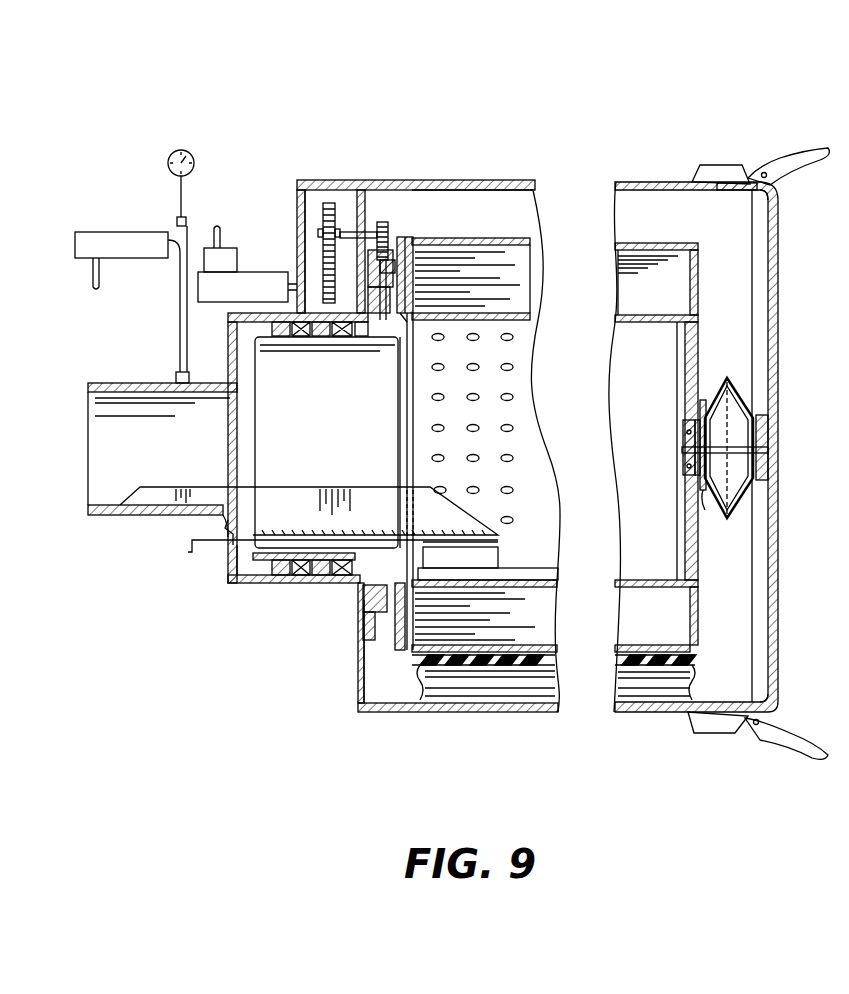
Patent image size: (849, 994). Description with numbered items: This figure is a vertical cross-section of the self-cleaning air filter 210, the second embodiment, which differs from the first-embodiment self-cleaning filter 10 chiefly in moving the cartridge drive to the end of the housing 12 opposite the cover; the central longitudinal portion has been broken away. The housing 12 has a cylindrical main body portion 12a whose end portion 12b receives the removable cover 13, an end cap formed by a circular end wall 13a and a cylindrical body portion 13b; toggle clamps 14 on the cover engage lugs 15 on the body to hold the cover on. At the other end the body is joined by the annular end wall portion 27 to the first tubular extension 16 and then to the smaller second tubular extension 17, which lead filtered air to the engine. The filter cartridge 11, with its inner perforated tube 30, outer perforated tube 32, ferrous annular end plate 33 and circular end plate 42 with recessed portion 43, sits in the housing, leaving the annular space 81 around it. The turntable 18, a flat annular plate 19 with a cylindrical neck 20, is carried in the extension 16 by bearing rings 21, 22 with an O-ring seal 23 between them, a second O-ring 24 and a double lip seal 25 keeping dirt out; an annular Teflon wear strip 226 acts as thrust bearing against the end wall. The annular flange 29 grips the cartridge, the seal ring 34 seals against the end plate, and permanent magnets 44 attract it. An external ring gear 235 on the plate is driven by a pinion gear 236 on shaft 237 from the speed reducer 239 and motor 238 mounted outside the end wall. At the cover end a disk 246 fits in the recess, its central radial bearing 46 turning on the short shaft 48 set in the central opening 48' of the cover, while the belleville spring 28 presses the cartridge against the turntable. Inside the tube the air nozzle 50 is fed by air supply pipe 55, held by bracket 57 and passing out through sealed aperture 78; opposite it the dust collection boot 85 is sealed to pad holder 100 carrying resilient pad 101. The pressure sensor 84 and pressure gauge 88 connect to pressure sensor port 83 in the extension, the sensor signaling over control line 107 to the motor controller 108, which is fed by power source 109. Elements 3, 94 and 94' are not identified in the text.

The self-cleaning air filter 210 is at (540, 93).
The housing 12 is at (481, 178).
The annular space 81 is at (519, 183).
The shaft 237 is at (333, 215).
The speed reducer 239 is at (322, 220).
The annular end wall portion 27 is at (349, 236).
The pinion gear 236 is at (386, 258).
The external ring gear 235 is at (396, 238).
The self-cleaning filter 10 is at (378, 205).
The annular flange 29 is at (411, 242).
The permanent magnets 44 is at (416, 262).
The seal ring 34 is at (416, 302).
The annular end plate 33 is at (500, 239).
The filter cartridge 11 is at (542, 238).
The inner perforated tube 30 is at (527, 334).
The annular Teflon wear strip 226 is at (403, 315).
The first tubular extension 16 is at (246, 583).
The dust collection boot 85 is at (372, 718).
The pad holder 100 is at (362, 704).
The cylindrical neck 20 is at (276, 345).
The bearing ring 22 is at (322, 345).
The flat annular plate 19 is at (391, 348).
The turntable 18 is at (376, 350).
The bearing ring 21 is at (268, 578).
The O-ring seal 23 is at (296, 573).
The second O-ring 24 is at (335, 573).
The double lip seal 25 is at (356, 588).
The second tubular extension 17 is at (110, 382).
The bracket 57 is at (152, 488).
The air supply pipe 55 is at (186, 541).
The sealed aperture 78 is at (222, 550).
The air nozzle 50 is at (485, 566).
The resilient pad 101 is at (450, 662).
The pressure gauge 88 is at (190, 152).
The pressure sensor 84 is at (116, 232).
The control line 107 is at (100, 272).
The power source 109 is at (180, 305).
The pressure sensor port 83 is at (178, 378).
The motor controller 108 is at (238, 266).
The motor 238 is at (226, 300).
The cylindrical main body portion 12a is at (632, 182).
The removable cover 13 is at (779, 264).
The cylindrical body portion 13b is at (777, 203).
The circular end wall 13a is at (778, 662).
The housing end portion 12b is at (738, 186).
The lugs 15 is at (712, 170).
The toggle clamps 14 is at (775, 151).
The outer perforated tube 32 is at (640, 243).
The duct interior 3 is at (668, 255).
The circular end plate 42 is at (698, 292).
The disk 246 is at (699, 338).
The recessed portion 43 is at (680, 380).
The belleville spring 28 is at (746, 382).
The valve seat 94 is at (759, 430).
The short shaft 48 is at (750, 434).
The central opening 48' is at (794, 457).
The central radial bearing 46 is at (683, 471).
The lower valve seat 94' is at (718, 521).